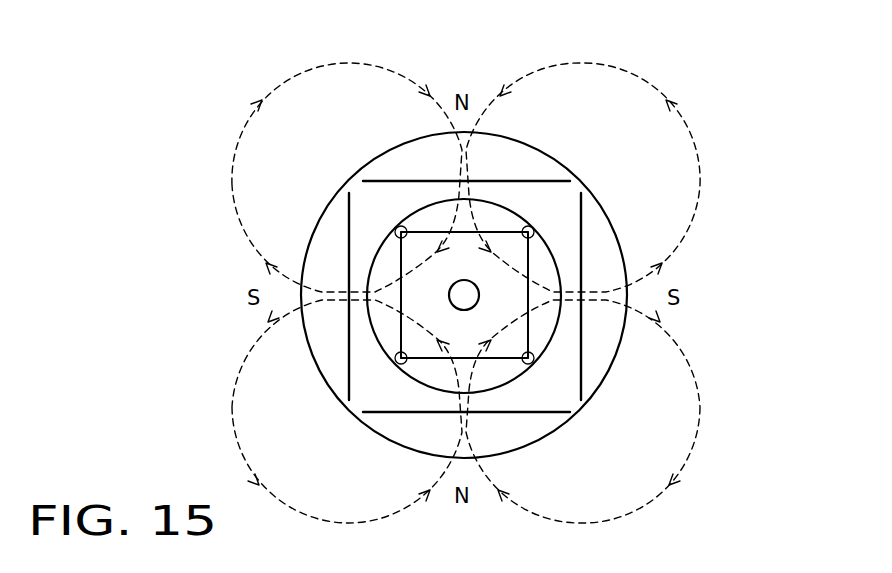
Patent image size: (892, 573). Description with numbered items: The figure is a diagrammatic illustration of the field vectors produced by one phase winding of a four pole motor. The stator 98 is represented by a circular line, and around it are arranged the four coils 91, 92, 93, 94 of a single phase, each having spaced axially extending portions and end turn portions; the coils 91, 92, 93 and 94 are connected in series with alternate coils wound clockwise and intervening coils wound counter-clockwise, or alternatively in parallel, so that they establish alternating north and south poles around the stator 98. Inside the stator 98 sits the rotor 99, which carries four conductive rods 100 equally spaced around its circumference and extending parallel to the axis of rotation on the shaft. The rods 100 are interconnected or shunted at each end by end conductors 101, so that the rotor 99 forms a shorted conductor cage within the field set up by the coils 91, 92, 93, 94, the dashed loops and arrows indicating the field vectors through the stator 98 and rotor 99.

The coil 91 is at (425, 227).
The coil 92 is at (583, 223).
The coil 93 is at (535, 413).
The coil 94 is at (348, 332).
The stator 98 is at (400, 227).
The rotor 99 is at (373, 332).
The conductive rods 100 is at (528, 226).
The end conductors 101 is at (400, 263).